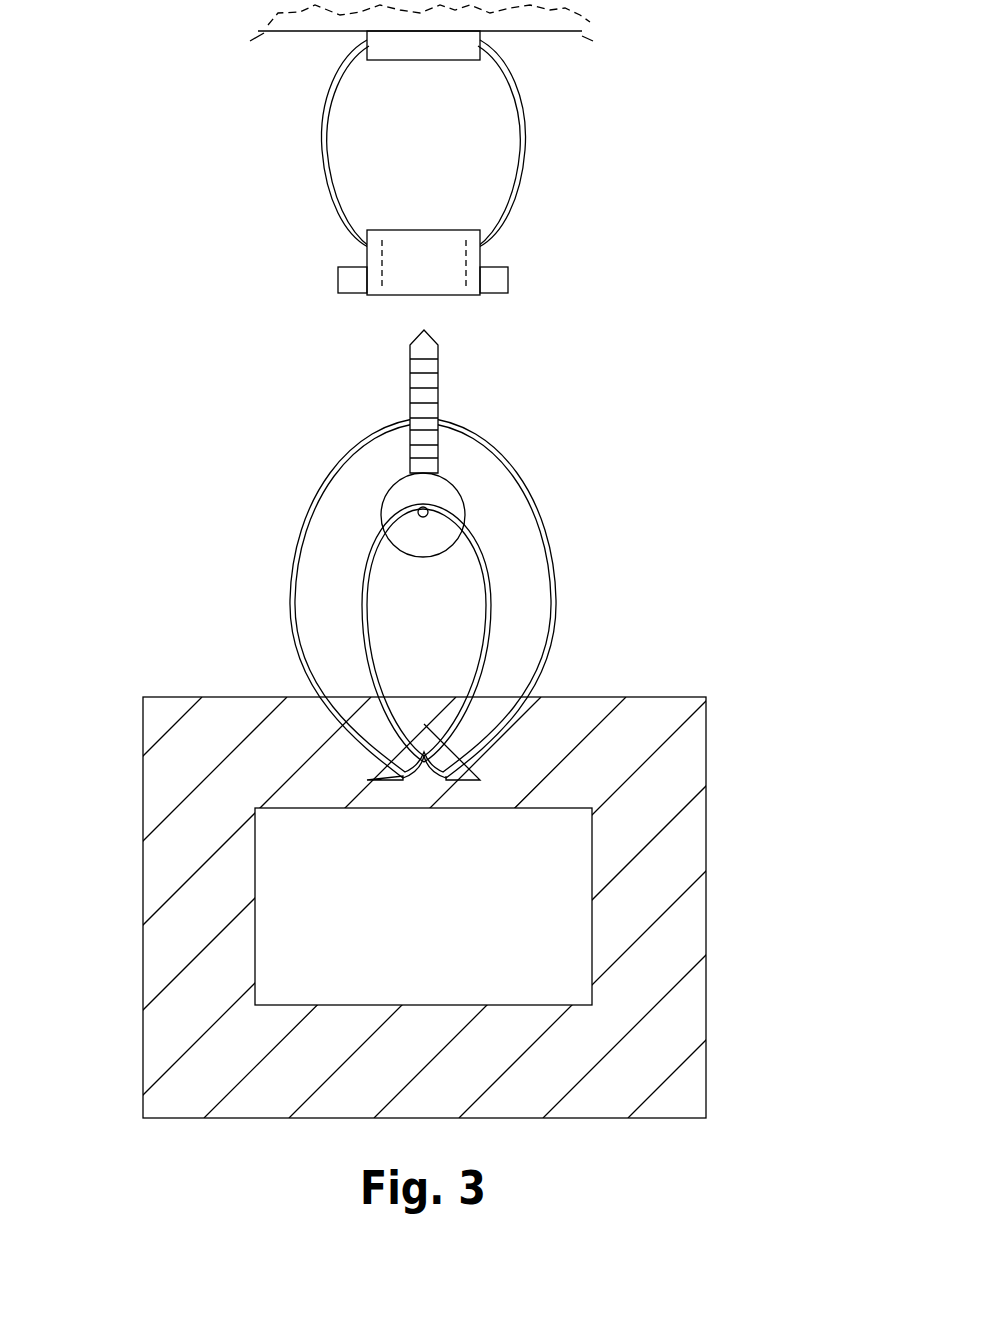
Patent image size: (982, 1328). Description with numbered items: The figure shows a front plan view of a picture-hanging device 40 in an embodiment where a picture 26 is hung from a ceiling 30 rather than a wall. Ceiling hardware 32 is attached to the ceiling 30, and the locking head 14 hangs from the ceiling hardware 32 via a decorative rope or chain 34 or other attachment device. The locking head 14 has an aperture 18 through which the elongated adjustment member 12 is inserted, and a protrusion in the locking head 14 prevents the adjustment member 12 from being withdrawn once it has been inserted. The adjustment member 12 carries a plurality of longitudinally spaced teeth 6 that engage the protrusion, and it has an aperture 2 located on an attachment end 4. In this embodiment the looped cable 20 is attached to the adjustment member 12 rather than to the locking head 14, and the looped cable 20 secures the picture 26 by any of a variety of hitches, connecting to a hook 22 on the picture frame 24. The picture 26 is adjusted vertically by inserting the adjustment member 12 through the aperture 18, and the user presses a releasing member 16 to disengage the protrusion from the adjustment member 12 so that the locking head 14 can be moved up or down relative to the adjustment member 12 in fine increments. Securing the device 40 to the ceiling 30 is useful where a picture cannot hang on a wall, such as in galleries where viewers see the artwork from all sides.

The aperture 2 is at (465, 513).
The attachment end 4 is at (383, 514).
The plurality of teeth 6 is at (423, 376).
The elongated adjustment member 12 is at (572, 407).
The locking head 14 is at (405, 384).
The releasing member 16 is at (339, 280).
The aperture 18 is at (421, 238).
The looped cable 20 is at (557, 613).
The hook 22 is at (405, 757).
The picture frame 24 is at (160, 723).
The picture 26 is at (742, 667).
The ceiling 30 is at (310, 33).
The ceiling hardware 32 is at (482, 42).
The decorative rope or chain 34 is at (320, 150).
The picture-hanging device 40 is at (200, 146).